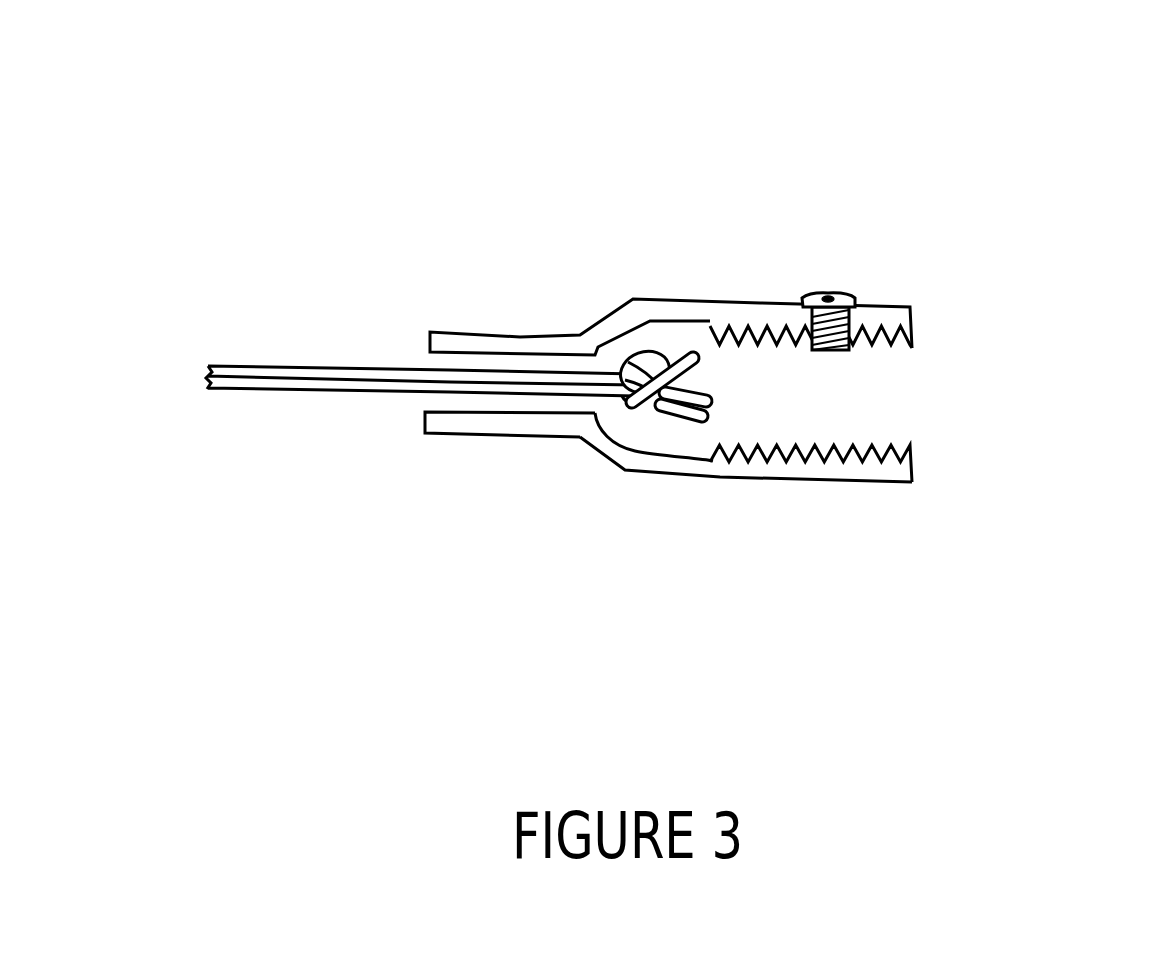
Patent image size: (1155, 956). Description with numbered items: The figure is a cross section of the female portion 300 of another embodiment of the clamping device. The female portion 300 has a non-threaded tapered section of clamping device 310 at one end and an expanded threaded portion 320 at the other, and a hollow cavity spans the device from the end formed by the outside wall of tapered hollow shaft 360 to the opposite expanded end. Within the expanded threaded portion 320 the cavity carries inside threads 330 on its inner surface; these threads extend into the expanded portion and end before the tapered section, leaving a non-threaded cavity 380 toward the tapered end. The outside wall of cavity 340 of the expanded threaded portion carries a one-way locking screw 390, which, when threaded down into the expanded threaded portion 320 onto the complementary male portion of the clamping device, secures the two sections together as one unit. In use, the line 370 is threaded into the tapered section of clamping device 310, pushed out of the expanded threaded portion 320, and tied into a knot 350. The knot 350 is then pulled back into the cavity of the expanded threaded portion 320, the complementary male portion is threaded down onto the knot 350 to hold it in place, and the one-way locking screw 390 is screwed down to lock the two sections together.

The female portion of clamping device 300 is at (304, 137).
The tapered section of clamping device 310 is at (522, 335).
The expanded threaded portion 320 is at (855, 408).
The inside threads 330 is at (883, 352).
The outside wall of cavity 340 is at (706, 476).
The knot 350 is at (650, 418).
The outside wall of tapered hollow shaft 360 is at (435, 402).
The line 370 is at (278, 385).
The non-threaded cavity 380 is at (667, 338).
The one-way locking screw 390 is at (850, 293).